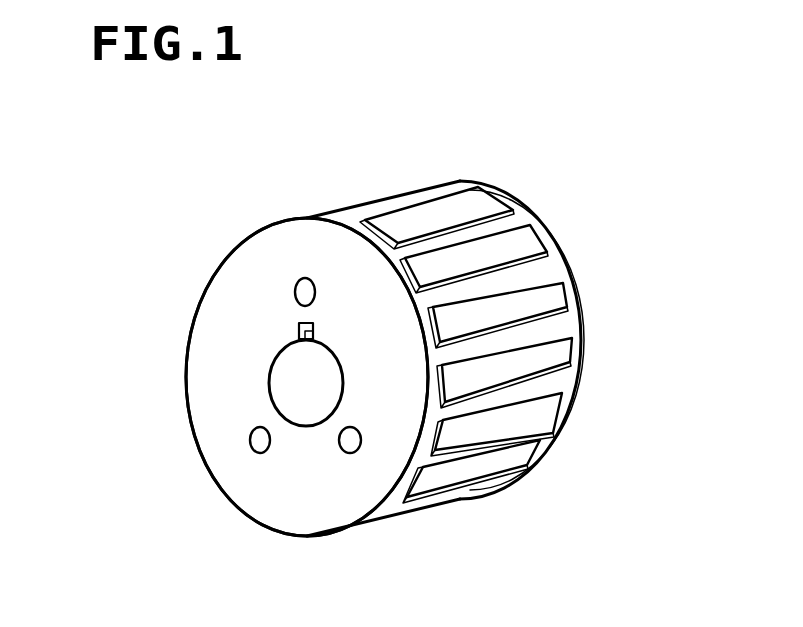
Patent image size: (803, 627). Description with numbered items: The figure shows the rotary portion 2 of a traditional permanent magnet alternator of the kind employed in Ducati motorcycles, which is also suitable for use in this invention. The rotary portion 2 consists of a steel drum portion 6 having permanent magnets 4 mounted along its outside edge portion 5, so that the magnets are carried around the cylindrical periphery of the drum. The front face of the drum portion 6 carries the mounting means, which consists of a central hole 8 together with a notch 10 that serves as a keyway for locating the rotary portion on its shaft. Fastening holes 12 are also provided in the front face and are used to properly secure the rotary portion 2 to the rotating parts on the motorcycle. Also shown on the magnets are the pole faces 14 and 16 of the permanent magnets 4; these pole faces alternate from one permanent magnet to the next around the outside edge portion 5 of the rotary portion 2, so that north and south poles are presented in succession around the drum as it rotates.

The rotary portion 2 is at (252, 280).
The permanent magnets 4 is at (485, 203).
The outside edge portion 5 is at (553, 325).
The steel drum portion 6 is at (250, 492).
The central hole 8 is at (290, 383).
The notch 10 is at (300, 333).
The fastening holes 12 is at (350, 448).
The pole face 14 is at (437, 202).
The pole face 16 is at (500, 243).